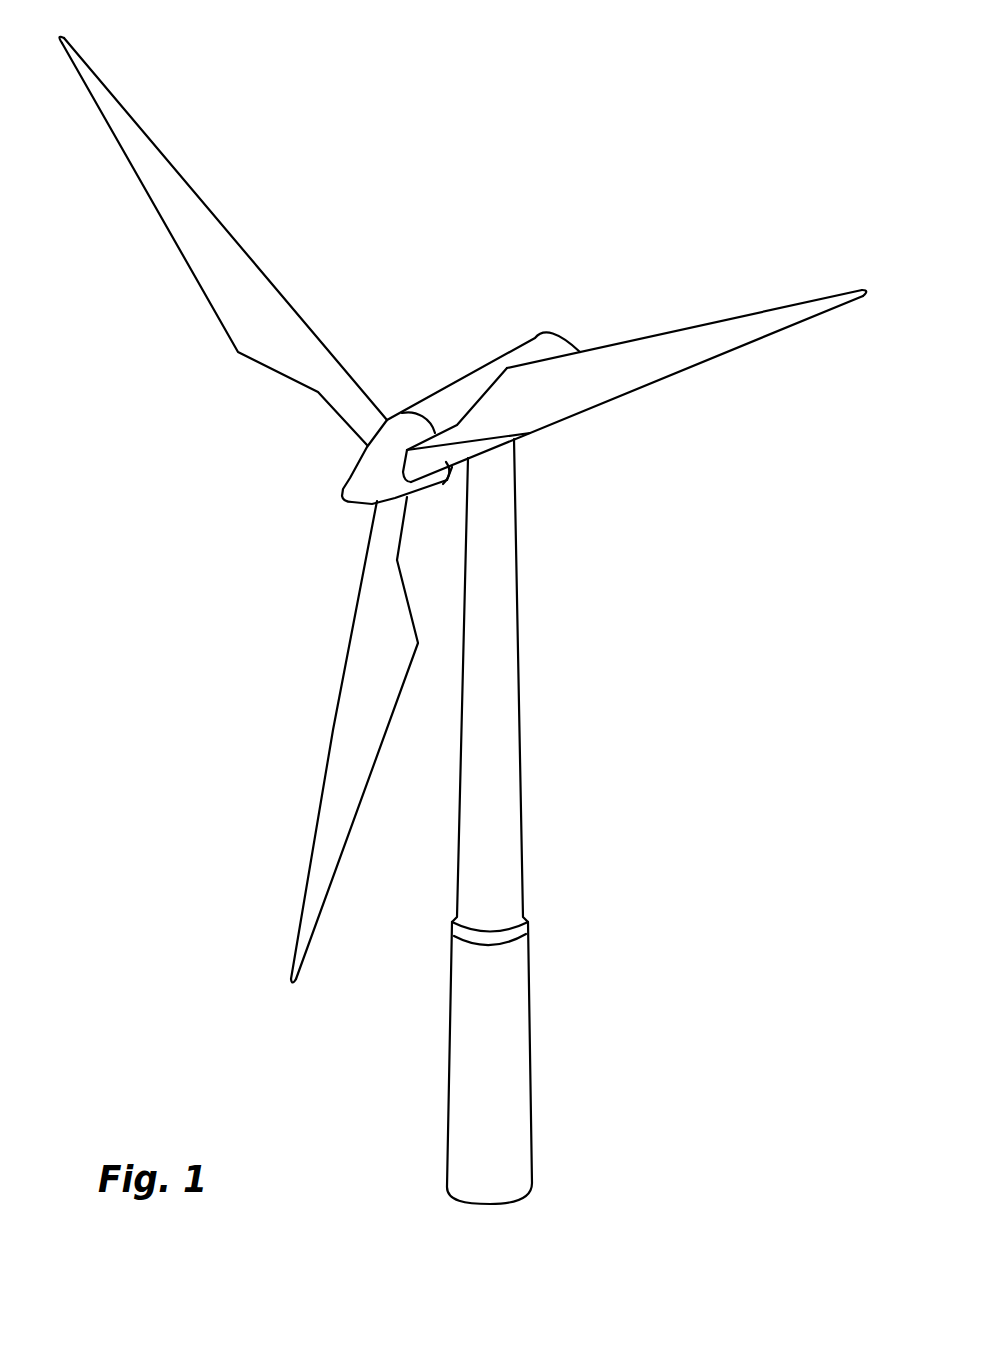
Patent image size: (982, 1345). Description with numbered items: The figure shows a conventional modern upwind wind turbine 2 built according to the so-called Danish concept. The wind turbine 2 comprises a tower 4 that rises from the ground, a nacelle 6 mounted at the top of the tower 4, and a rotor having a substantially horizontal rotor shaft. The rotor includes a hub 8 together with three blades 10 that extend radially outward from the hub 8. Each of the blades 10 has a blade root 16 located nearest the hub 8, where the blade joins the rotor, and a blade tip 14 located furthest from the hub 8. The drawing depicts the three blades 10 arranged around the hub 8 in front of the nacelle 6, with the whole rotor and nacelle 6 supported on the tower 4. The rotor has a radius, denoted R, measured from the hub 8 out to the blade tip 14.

The wind turbine 2 is at (618, 763).
The tower 4 is at (508, 687).
The nacelle 6 is at (453, 393).
The hub 8 is at (363, 475).
The blade 10 is at (253, 330).
The blade tip 14 is at (99, 88).
The blade root 16 is at (363, 440).